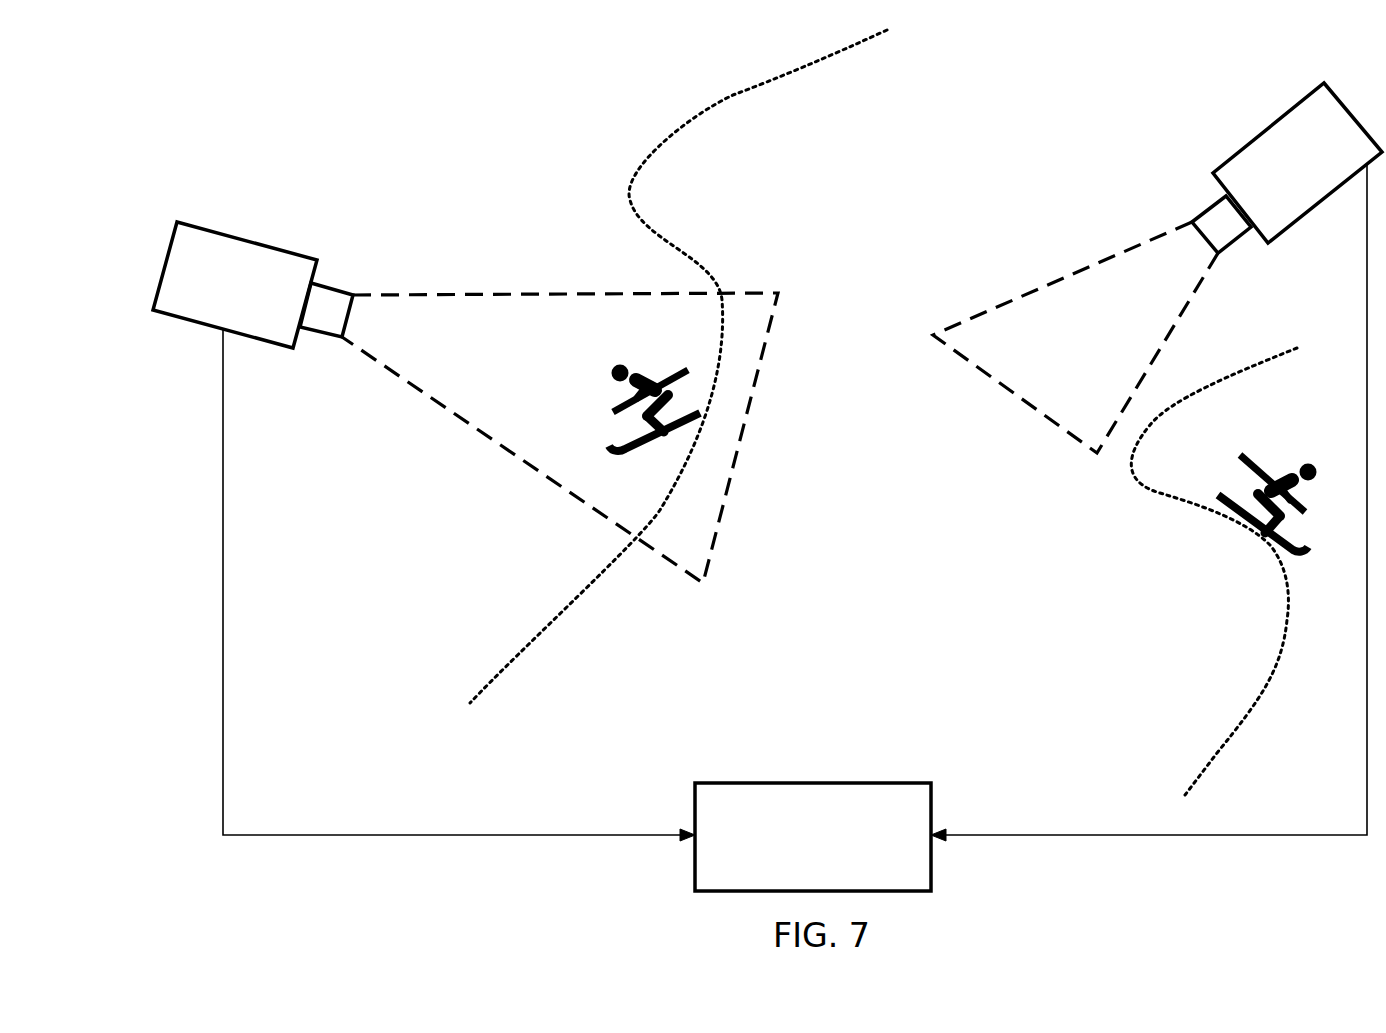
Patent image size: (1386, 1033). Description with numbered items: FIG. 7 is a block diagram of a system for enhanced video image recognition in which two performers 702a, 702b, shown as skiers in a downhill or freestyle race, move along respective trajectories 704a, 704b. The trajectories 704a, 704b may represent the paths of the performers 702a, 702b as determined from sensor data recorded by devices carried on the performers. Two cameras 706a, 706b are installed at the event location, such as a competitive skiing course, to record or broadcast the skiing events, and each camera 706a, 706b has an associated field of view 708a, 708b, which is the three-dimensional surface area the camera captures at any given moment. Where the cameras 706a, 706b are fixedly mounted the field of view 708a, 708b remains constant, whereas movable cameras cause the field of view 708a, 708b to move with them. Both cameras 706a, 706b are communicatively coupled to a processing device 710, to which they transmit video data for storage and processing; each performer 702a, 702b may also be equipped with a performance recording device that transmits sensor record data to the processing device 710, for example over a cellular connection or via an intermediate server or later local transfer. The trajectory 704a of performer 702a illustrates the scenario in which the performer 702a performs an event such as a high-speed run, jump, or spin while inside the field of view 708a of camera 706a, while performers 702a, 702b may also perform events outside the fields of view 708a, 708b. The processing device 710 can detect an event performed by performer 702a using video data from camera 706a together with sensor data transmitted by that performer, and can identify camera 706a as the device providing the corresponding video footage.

The performer 702a is at (598, 412).
The performer 702b is at (1238, 523).
The trajectory 704a is at (728, 97).
The trajectory 704b is at (1203, 772).
The camera 706a is at (202, 228).
The camera 706b is at (1268, 123).
The field of view 708a is at (737, 452).
The field of view 708b is at (992, 380).
The processing device 710 is at (795, 528).